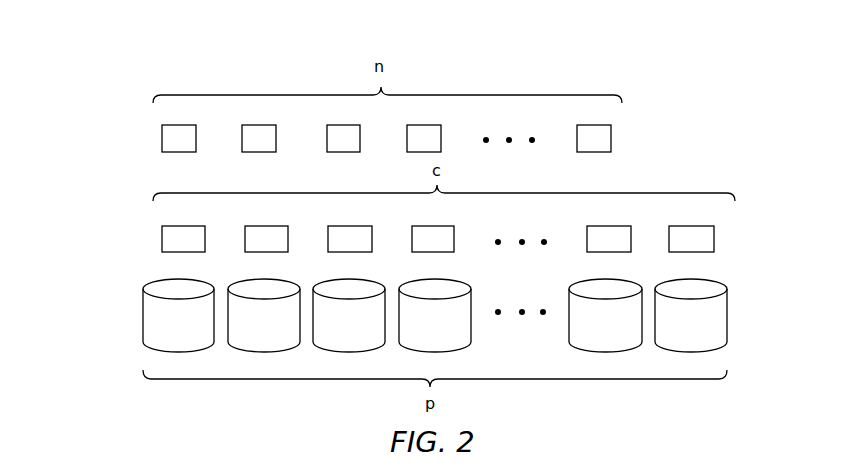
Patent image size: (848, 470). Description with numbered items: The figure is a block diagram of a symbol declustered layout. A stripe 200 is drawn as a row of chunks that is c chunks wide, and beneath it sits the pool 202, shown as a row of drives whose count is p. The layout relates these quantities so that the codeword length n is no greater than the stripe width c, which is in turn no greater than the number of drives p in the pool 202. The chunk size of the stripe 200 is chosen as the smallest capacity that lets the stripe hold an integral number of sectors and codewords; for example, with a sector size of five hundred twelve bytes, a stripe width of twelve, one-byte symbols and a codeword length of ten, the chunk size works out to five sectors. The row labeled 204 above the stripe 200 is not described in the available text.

The row of n elements 204 is at (118, 137).
The stripe 200 is at (118, 239).
The pool 202 is at (106, 314).